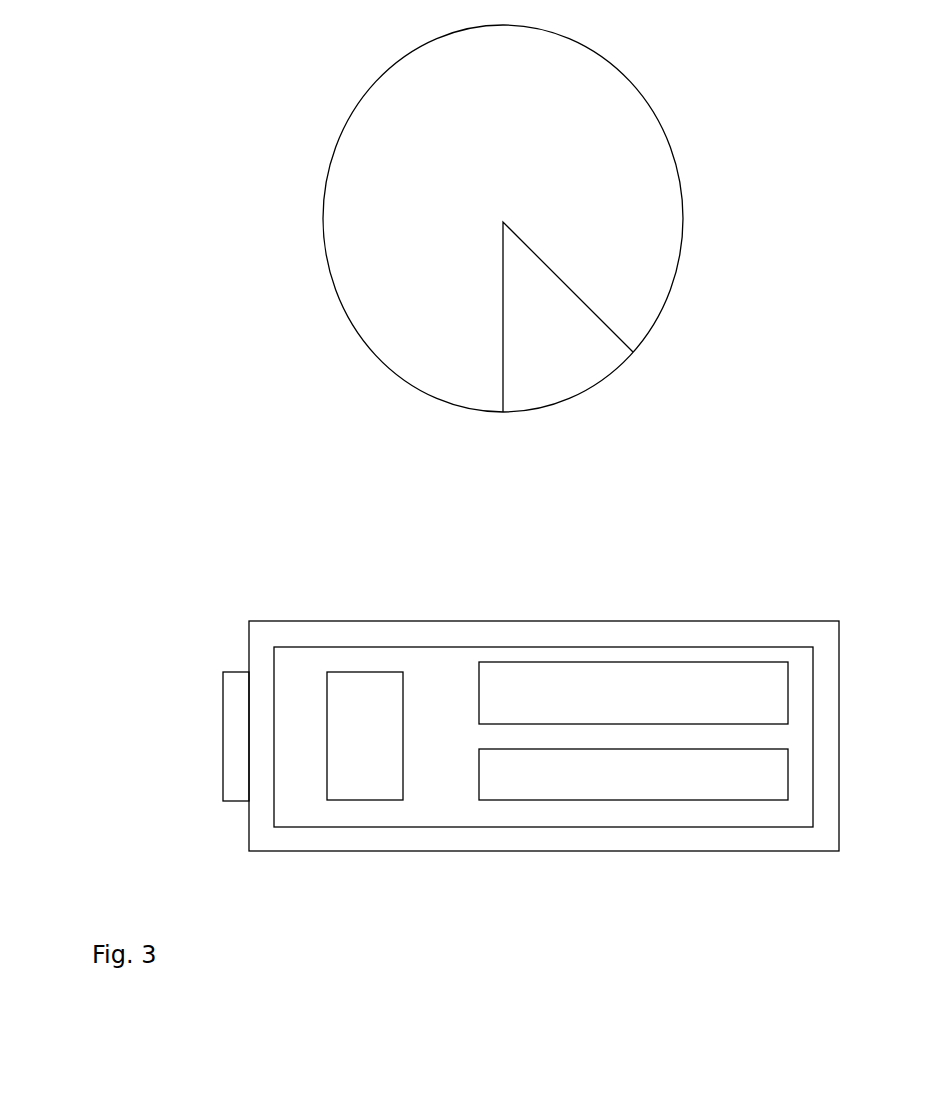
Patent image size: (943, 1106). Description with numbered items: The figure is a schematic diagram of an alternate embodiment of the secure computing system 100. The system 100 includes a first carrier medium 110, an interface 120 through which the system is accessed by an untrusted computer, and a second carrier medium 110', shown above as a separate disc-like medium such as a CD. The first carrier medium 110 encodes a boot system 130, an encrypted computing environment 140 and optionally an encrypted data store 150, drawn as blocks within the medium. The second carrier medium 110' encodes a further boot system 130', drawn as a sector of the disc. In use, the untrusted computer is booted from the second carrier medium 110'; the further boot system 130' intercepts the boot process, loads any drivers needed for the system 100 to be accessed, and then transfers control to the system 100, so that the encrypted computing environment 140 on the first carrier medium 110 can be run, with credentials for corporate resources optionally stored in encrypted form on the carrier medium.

The system 100 is at (429, 620).
The first carrier medium 110 is at (543, 807).
The second carrier medium 110' is at (588, 218).
The interface 120 is at (223, 733).
The boot system 130 is at (348, 614).
The further boot system 130' is at (668, 318).
The encrypted computing environment 140 is at (658, 698).
The encrypted data store 150 is at (603, 793).